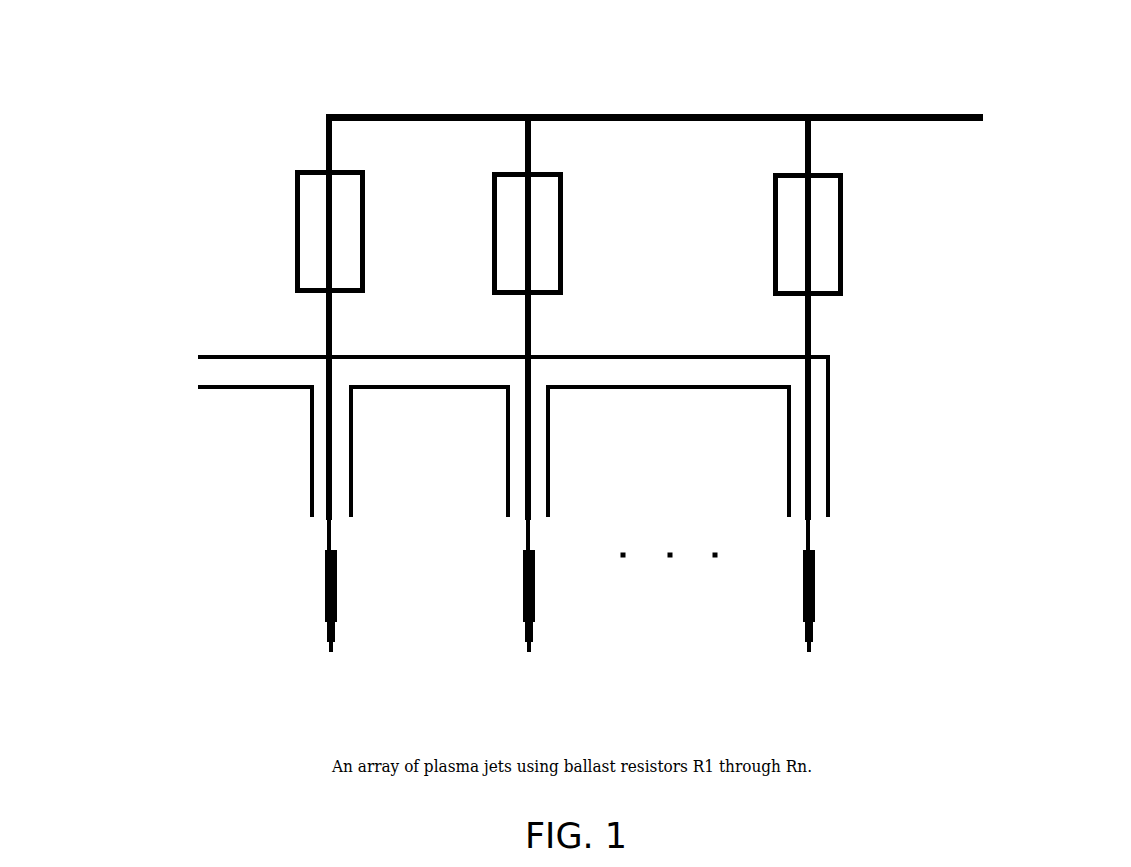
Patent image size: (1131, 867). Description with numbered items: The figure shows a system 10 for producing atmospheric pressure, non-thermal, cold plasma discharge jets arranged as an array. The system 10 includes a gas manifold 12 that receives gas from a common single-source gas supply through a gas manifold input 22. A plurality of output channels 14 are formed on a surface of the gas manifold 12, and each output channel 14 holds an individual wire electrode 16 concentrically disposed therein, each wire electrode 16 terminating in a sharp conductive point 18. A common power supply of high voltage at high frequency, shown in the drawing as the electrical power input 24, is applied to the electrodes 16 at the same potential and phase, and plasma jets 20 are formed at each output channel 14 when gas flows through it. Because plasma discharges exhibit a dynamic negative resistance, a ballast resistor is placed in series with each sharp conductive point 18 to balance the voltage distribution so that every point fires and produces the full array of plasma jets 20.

The system 10 is at (205, 213).
The gas manifold 12 is at (250, 357).
The output channel 14 is at (312, 437).
The wire electrode 16 is at (332, 413).
The sharp conductive point 18 is at (333, 518).
The plasma jet 20 is at (326, 586).
The gas manifold input 22 is at (118, 389).
The electrical power input 24 is at (716, 139).